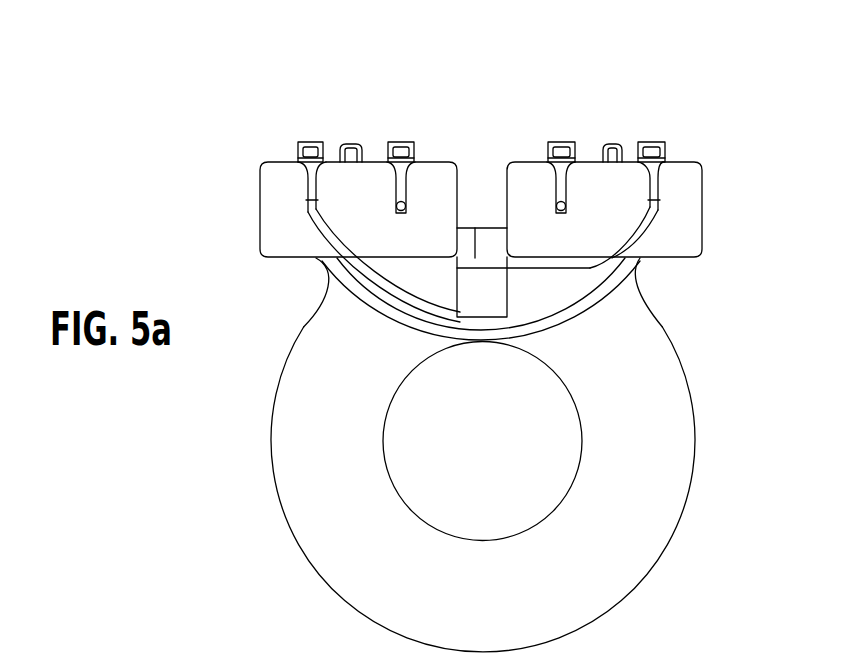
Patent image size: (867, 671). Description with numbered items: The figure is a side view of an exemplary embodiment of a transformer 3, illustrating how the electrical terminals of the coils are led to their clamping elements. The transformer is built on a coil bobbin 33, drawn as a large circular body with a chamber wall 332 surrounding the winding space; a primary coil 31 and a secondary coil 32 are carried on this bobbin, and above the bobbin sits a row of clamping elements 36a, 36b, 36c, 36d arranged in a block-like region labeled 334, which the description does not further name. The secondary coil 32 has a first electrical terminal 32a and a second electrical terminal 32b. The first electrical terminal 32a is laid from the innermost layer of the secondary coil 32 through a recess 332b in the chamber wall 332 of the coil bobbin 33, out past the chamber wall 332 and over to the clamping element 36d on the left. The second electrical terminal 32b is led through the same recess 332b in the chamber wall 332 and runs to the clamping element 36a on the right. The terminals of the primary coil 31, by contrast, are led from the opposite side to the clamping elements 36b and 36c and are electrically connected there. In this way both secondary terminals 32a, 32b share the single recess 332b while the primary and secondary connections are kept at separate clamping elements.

The transformer 3 is at (240, 101).
The primary coil 31 is at (490, 242).
The secondary coil 32 is at (472, 290).
The first electrical terminal 32a is at (334, 238).
The second electrical terminal 32b is at (620, 238).
The coil bobbin 33 is at (653, 488).
The chamber wall 332 is at (331, 443).
The recess 332b is at (512, 100).
The valve block 334 is at (239, 137).
The clamping element 36a is at (652, 142).
The clamping element 36b is at (565, 142).
The clamping element 36c is at (406, 142).
The clamping element 36d is at (312, 142).